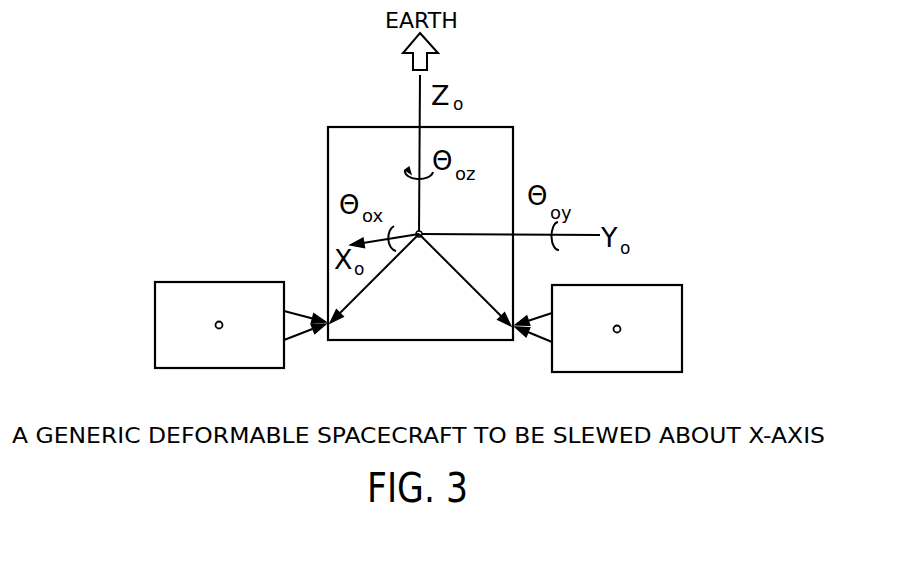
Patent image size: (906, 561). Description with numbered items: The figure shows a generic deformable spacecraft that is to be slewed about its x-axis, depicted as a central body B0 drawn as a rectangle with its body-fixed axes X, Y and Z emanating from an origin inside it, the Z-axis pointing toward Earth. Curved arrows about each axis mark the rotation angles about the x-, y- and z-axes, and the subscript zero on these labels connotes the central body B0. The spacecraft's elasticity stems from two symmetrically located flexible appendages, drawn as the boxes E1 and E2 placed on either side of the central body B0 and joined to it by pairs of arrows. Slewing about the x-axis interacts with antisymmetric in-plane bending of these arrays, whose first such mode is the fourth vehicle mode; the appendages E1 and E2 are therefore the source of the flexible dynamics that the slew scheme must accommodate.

The central body B0 is at (420, 256).
The flexible appendage 1 E1 is at (598, 348).
The flexible appendage 2 E2 is at (240, 346).